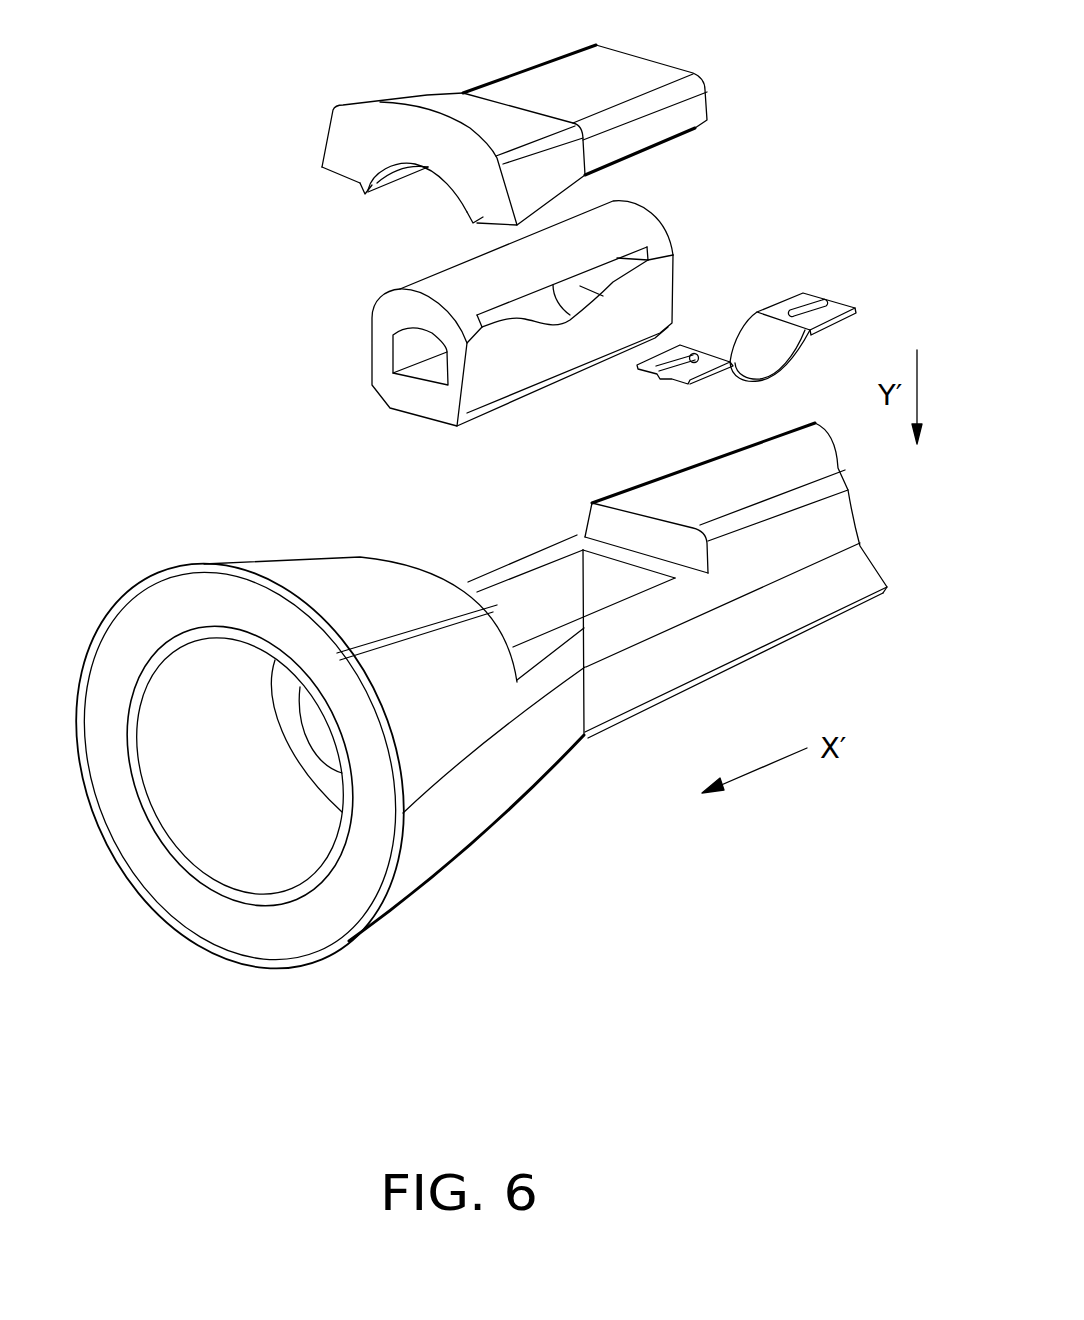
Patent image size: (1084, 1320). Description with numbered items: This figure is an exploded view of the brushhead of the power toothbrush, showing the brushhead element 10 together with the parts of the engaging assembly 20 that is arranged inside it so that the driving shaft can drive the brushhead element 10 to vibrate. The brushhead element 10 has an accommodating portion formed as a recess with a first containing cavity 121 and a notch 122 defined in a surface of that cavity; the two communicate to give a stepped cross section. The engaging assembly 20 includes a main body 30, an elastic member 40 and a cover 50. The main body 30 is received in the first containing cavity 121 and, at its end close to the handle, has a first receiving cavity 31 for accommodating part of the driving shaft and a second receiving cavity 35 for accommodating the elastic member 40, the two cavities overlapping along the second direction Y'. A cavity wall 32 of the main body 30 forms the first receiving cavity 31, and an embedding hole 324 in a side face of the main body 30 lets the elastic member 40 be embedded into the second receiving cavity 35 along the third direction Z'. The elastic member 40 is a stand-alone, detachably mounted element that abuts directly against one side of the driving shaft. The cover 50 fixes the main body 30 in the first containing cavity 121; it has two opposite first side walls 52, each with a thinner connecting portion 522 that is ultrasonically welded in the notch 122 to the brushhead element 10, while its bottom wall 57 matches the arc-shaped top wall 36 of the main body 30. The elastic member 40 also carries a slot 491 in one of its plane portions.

The brushhead element 10 is at (451, 721).
The first containing cavity 121 is at (527, 583).
The notch 122 is at (603, 522).
The engaging assembly 20 is at (306, 284).
The main body 30 is at (528, 306).
The first receiving cavity 31 is at (420, 370).
The cavity wall 32 is at (388, 337).
The embedding hole 324 is at (612, 250).
The second receiving cavity 35 is at (527, 303).
The top wall 36 is at (457, 285).
The elastic member 40 is at (764, 323).
The slot 491 is at (812, 303).
The cover 50 is at (551, 138).
The first side wall 52 is at (695, 103).
The connecting portion 522 is at (683, 137).
The bottom wall 57 is at (427, 173).